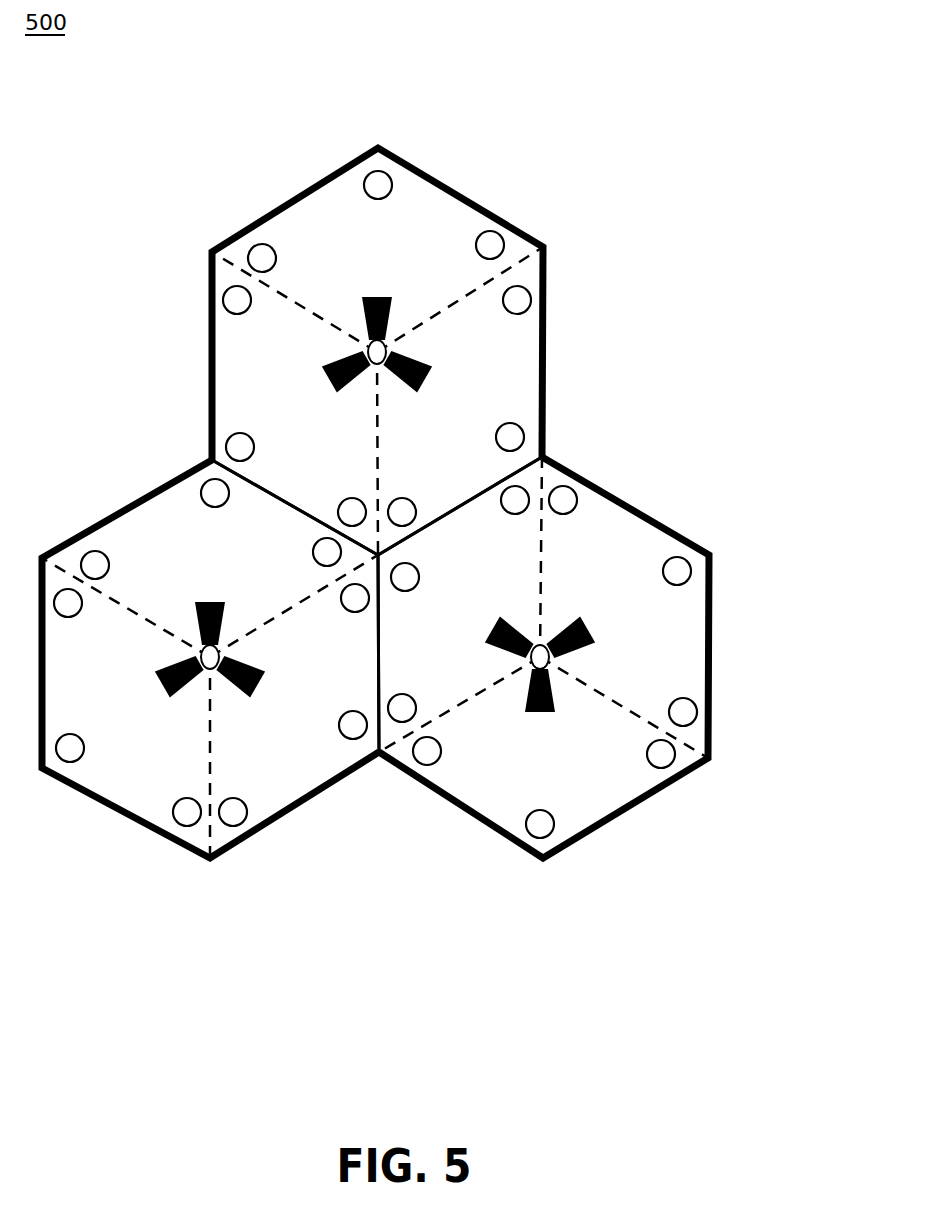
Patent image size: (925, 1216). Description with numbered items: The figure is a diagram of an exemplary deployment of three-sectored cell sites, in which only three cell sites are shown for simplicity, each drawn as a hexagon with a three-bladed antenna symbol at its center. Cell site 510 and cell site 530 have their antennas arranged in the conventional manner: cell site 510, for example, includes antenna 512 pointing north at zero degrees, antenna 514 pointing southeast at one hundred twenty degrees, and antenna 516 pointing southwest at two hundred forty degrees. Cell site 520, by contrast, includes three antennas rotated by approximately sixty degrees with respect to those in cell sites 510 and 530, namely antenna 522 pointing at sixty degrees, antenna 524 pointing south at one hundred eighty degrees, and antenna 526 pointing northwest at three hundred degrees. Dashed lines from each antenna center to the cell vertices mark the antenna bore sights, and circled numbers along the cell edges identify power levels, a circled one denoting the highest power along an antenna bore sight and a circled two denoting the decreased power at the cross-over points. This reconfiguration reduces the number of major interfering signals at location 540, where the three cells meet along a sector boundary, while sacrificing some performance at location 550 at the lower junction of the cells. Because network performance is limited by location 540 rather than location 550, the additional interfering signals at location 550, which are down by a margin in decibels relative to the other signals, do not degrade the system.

The cell site 510 is at (450, 188).
The antenna 512 is at (375, 298).
The antenna 514 is at (410, 366).
The antenna 516 is at (342, 377).
The cell site 520 is at (712, 637).
The antenna 522 is at (586, 632).
The antenna 524 is at (540, 714).
The antenna 526 is at (496, 632).
The cell site 530 is at (101, 808).
The location 540 is at (337, 492).
The location 550 is at (378, 758).